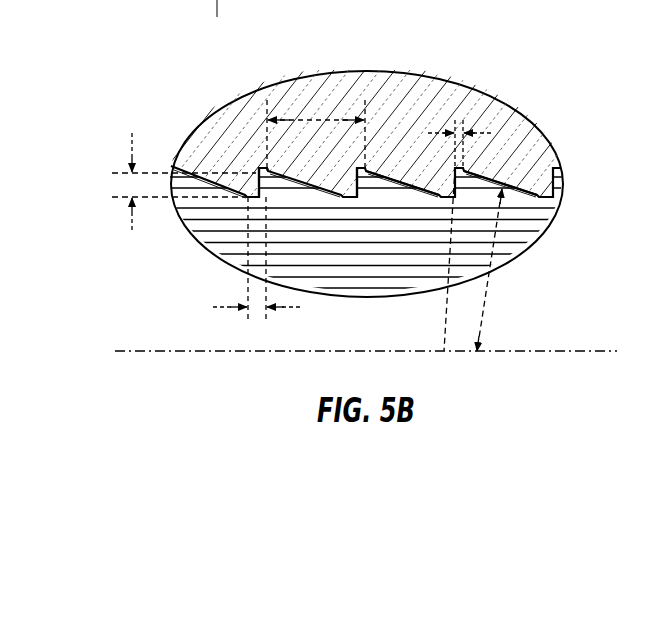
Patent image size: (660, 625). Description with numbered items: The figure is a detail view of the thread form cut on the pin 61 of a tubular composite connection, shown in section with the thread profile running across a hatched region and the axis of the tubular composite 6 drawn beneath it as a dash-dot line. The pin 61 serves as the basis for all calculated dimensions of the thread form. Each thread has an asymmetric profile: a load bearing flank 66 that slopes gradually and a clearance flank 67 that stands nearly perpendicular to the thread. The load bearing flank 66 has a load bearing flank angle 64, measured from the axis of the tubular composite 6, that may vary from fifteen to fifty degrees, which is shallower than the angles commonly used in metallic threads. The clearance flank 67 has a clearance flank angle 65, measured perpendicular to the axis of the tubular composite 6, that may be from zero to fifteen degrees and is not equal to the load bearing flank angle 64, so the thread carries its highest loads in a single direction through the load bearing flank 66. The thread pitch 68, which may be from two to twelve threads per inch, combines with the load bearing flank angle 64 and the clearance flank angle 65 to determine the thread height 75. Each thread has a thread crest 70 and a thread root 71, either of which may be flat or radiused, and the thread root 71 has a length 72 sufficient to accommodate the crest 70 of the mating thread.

The pin 61 is at (198, 222).
The load bearing flank angle 64 is at (477, 304).
The clearance flank angle 65 is at (488, 130).
The load bearing flank 66 is at (520, 183).
The clearance flank 67 is at (374, 186).
The thread pitch 68 is at (303, 118).
The thread crest 70 is at (275, 168).
The thread root 71 is at (352, 198).
The length of thread root 72 is at (226, 306).
The thread height 75 is at (132, 228).
The axis of the tubular composite 6 is at (130, 350).